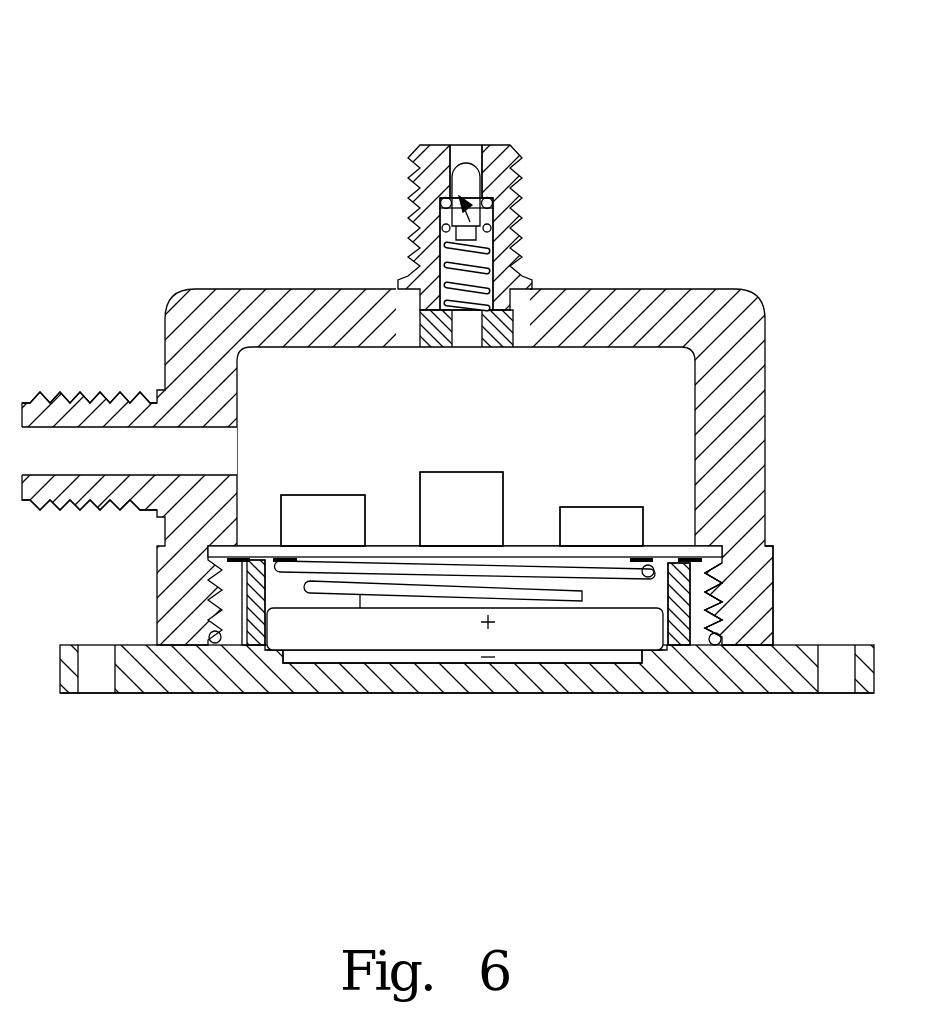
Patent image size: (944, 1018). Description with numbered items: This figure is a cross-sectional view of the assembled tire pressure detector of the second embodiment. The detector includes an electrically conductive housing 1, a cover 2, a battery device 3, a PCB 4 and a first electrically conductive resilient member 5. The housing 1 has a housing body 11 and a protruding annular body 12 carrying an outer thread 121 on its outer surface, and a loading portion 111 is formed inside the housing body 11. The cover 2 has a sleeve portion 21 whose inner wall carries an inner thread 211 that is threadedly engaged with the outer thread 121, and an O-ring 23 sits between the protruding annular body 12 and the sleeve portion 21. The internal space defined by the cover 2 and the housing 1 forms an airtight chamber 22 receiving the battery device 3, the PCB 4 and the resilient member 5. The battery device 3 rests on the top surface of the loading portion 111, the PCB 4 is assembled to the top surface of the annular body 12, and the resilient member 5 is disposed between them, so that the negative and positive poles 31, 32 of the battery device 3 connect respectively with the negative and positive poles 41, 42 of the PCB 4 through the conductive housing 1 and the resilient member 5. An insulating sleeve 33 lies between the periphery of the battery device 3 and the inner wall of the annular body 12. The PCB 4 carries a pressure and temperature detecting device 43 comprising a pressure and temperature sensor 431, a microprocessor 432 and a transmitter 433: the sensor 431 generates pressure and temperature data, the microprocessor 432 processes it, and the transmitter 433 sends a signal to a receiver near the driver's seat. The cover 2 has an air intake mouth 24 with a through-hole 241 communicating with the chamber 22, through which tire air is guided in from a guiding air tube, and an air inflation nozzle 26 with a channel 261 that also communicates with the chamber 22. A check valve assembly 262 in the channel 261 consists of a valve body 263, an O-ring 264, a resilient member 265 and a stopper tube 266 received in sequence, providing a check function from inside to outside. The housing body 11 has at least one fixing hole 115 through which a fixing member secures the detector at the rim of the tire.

The electrically conductive housing 1 is at (467, 745).
The housing body 11 is at (628, 697).
The loading portion 111 is at (552, 695).
The fixing hole 115 is at (823, 693).
The protruding annular body 12 is at (768, 533).
The outer thread 121 is at (723, 580).
The inner thread 211 is at (790, 599).
The cover 2 is at (437, 425).
The sleeve portion 21 is at (753, 442).
The airtight chamber 22 is at (285, 378).
The O-ring 23 is at (716, 646).
The air intake mouth 24 is at (42, 503).
The through-hole 241 is at (143, 447).
The air inflation nozzle 26 is at (469, 181).
The channel 261 is at (465, 153).
The check valve assembly 262 is at (490, 243).
The valve body 263 is at (433, 177).
The O-ring 264 is at (440, 203).
The resilient member 265 is at (440, 273).
The stopper tube 266 is at (512, 327).
The battery device 3 is at (479, 677).
The negative pole 31 is at (455, 655).
The positive pole 32 is at (427, 623).
The insulating sleeve 33 is at (723, 610).
The PCB 4 is at (454, 466).
The negative pole 41 is at (223, 548).
The positive pole 42 is at (280, 560).
The pressure and temperature detecting device 43 is at (582, 480).
The pressure and temperature sensor 431 is at (318, 508).
The microprocessor 432 is at (450, 485).
The transmitter 433 is at (603, 518).
The first electrically conductive resilient member 5 is at (357, 573).